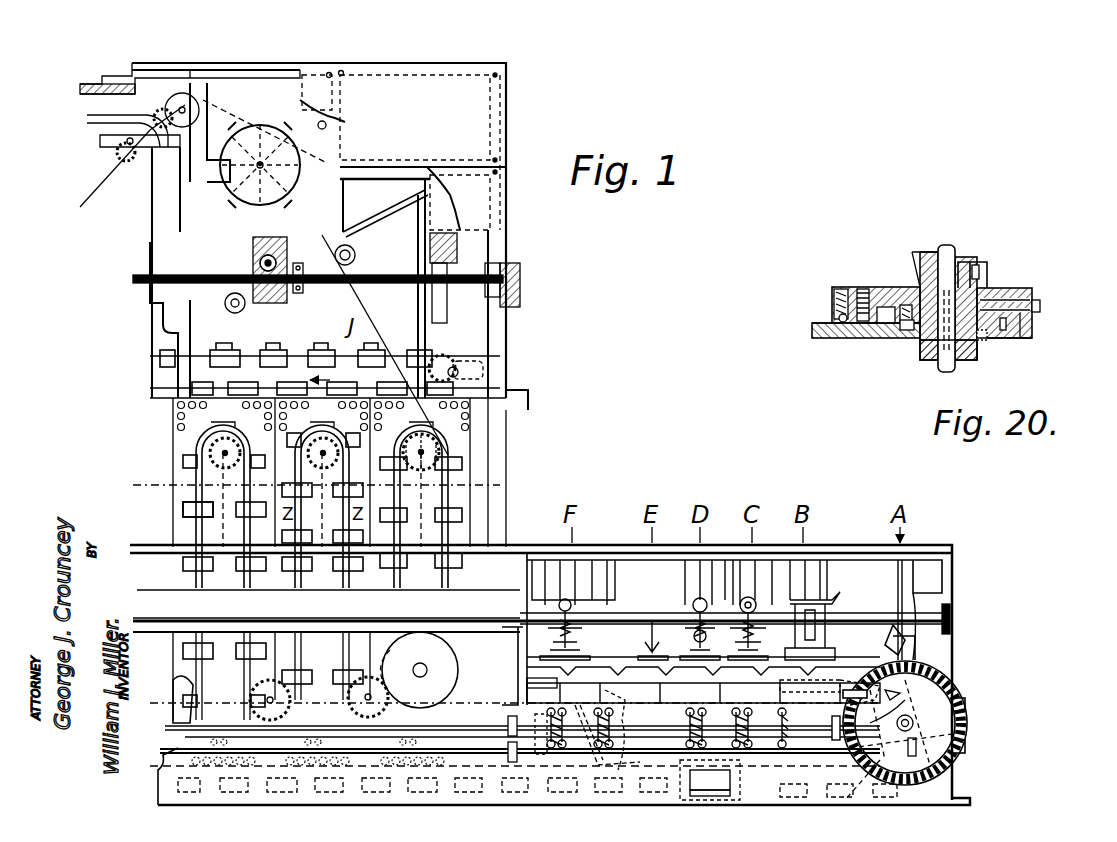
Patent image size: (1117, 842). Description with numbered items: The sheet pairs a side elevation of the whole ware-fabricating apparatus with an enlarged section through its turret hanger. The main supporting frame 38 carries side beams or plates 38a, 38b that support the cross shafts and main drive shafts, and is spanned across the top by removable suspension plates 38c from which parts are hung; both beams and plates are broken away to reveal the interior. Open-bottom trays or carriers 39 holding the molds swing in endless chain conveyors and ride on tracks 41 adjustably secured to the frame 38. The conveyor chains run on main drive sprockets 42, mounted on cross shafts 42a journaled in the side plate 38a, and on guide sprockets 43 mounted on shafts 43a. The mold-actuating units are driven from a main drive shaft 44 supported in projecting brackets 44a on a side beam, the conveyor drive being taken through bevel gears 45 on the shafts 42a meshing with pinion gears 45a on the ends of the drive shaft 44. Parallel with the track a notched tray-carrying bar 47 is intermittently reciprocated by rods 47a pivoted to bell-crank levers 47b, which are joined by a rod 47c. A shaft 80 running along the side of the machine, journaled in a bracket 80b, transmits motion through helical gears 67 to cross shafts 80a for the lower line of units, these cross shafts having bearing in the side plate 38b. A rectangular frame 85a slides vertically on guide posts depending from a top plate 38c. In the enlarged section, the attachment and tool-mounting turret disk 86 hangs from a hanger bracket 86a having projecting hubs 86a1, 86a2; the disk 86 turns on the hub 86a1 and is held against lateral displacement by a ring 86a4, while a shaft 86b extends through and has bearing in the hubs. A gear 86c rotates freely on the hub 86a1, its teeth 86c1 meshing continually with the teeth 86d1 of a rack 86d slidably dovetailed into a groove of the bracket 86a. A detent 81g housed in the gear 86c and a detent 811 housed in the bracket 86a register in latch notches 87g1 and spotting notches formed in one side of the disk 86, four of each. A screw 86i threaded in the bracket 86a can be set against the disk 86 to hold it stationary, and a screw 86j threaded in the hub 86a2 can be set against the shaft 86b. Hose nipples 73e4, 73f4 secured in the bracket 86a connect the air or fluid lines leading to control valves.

In FIG. 1, the main supporting frame 38 is at (953, 572).
In FIG. 1, the side beam or plate 38a is at (159, 776).
In FIG. 1, the side beam or plate 38b is at (152, 262).
In FIG. 1, the suspension plate 38c is at (255, 222).
In FIG. 1, the tray or carrier 39 is at (183, 509).
In FIG. 1, the track 41 is at (820, 660).
In FIG. 1, the main drive sprocket 42 is at (950, 695).
In FIG. 1, the cross shaft 42a is at (913, 723).
In FIG. 1, the guide sprocket 43 is at (322, 437).
In FIG. 1, the shaft 43a is at (421, 452).
In FIG. 1, the main drive shaft 44 is at (522, 720).
In FIG. 1, the projecting bracket 44a is at (508, 722).
In FIG. 1, the bevel gear 45 is at (952, 758).
In FIG. 1, the pinion gear 45a is at (900, 719).
In FIG. 1, the tray-carrying bar 47 is at (523, 683).
In FIG. 1, the rod 47a is at (523, 693).
In FIG. 1, the bell-crank lever 47b is at (575, 770).
In FIG. 1, the rod 47c is at (693, 728).
In FIG. 1, the helical gear 67 is at (291, 293).
In FIG. 1, the shaft 80 is at (378, 618).
In FIG. 1, the cross shaft 80a is at (755, 598).
In FIG. 1, the bracket 80b is at (950, 612).
In FIG. 1, the frame 85a is at (680, 603).
In FIG. 20, the attachment and tool-mounting turret disk 86 is at (812, 330).
In FIG. 20, the hanger bracket 86a is at (832, 300).
In FIG. 20, the projecting hub portion 86a1 is at (920, 358).
In FIG. 20, the projecting hub portion 86a2 is at (932, 250).
In FIG. 20, the ring 86a4 is at (985, 345).
In FIG. 20, the shaft 86b is at (932, 362).
In FIG. 20, the gear 86c is at (908, 300).
In FIG. 20, the gear teeth 86c1 is at (884, 305).
In FIG. 20, the rack 86d is at (1005, 292).
In FIG. 20, the rack teeth 86d1 is at (995, 290).
In FIG. 20, the screw 86i is at (862, 290).
In FIG. 20, the screw 86j is at (978, 262).
In FIG. 20, the hose nipple 73e4 is at (1040, 305).
In FIG. 20, the hose nipple 73f4 is at (1032, 318).
In FIG. 20, the detent 811 is at (830, 336).
In FIG. 20, the detent 81g is at (904, 328).
In FIG. 20, the latch notch 87g1 is at (1000, 340).